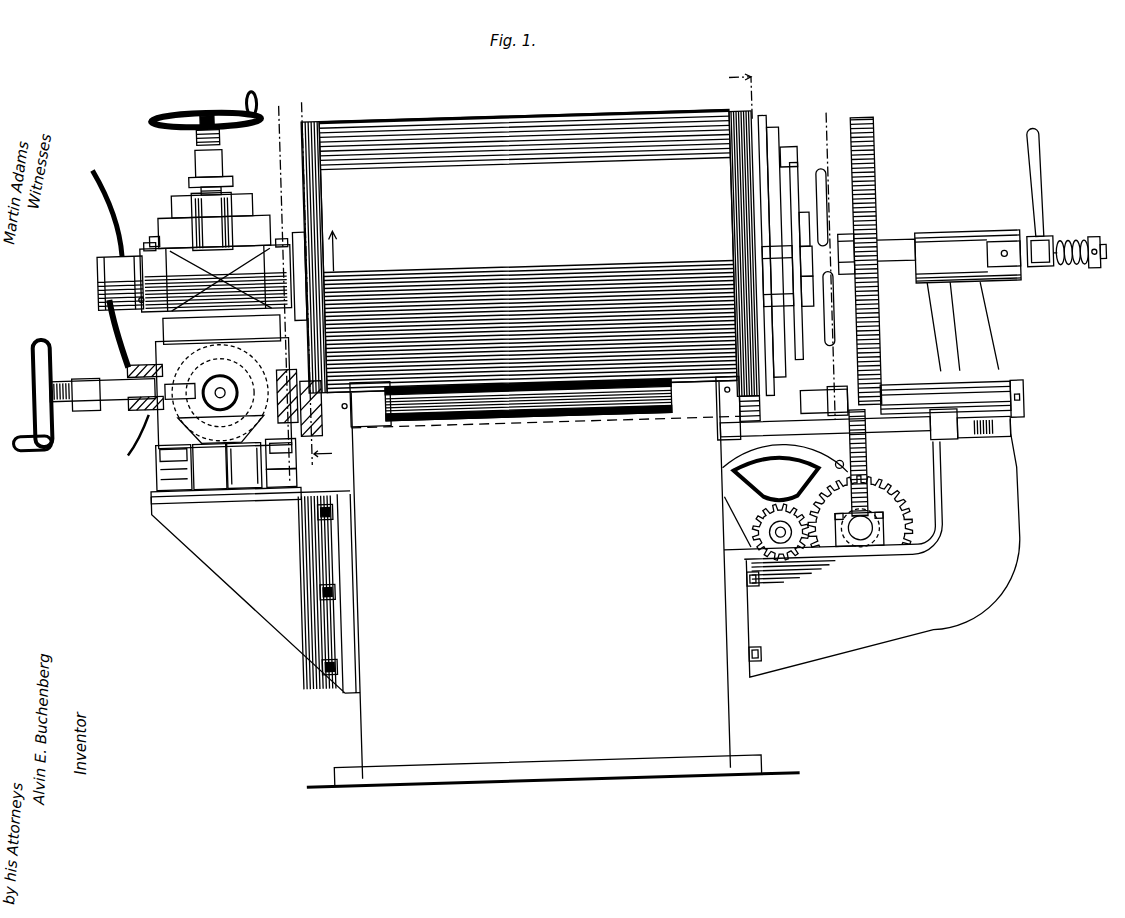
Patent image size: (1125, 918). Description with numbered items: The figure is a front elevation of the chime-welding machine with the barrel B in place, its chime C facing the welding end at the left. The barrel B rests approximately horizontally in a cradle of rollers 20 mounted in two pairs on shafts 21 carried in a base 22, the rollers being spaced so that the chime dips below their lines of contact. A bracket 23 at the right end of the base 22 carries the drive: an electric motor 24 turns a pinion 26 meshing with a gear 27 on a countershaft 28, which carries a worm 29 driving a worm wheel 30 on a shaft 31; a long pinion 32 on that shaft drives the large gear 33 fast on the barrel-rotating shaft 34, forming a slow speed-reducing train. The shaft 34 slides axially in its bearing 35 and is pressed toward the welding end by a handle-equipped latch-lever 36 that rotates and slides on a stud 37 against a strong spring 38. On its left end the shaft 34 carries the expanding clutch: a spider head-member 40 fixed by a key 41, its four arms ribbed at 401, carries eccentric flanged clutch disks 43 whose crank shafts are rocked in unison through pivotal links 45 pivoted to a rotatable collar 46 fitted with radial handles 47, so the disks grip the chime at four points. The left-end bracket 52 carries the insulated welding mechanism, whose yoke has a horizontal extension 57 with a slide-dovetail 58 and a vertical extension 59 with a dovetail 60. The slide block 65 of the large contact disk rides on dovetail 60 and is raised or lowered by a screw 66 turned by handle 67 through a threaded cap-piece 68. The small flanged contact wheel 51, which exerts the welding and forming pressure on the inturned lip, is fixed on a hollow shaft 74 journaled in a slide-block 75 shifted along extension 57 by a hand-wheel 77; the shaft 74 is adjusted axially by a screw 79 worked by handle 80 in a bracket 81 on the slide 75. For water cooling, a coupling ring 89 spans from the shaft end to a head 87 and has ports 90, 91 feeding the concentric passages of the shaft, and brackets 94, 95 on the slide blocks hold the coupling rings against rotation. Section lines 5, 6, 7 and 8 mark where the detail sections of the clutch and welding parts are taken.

The barrel B is at (484, 113).
The rollers 20 is at (718, 402).
The shafts 21 is at (597, 413).
The base 22 is at (721, 718).
The bracket 23 is at (883, 628).
The electric motor 24 is at (738, 497).
The pinion 26 is at (790, 560).
The gear 27 is at (905, 530).
The countershaft 28 is at (862, 548).
The worm 29 is at (848, 550).
The worm wheel 30 is at (866, 462).
The shaft 31 is at (1044, 401).
The pinion 32 is at (900, 392).
The large gear 33 is at (884, 162).
The barrel rotating shaft 34 is at (900, 246).
The bearing 35 is at (958, 240).
The latch-lever 36 is at (1047, 279).
The stud 37 is at (1108, 282).
The spring 38 is at (1080, 279).
The head-member 40 is at (772, 120).
The ribs 401 is at (797, 151).
The key 41 is at (762, 470).
The clutch disks 43 is at (782, 422).
The pivotal links 45 is at (760, 316).
The rotatable collar 46 is at (812, 232).
The radial handles 47 is at (832, 352).
The section line 5— 5 is at (844, 385).
The section line 6— 6 is at (763, 473).
The section line 7— 7 is at (288, 469).
The section line 8— 8 is at (316, 458).
The chime C is at (316, 451).
The small contact wheel 51 is at (281, 463).
The bracket 52 is at (231, 555).
The horizontal extension 57 is at (158, 480).
The horizontal slide-dovetail 58 is at (244, 466).
The vertical extension 59 is at (166, 330).
The slide dovetail 60 is at (194, 184).
The slide block 65 is at (250, 234).
The screw 66 is at (230, 124).
The handle 67 is at (241, 100).
The cap-piece 68 is at (232, 148).
The shaft 74 is at (135, 396).
The slide-block 75 is at (162, 426).
The hand-wheel 77 is at (191, 467).
The screw 79 is at (242, 372).
The handle 80 is at (50, 332).
The bracket 81 is at (90, 394).
The head 87 is at (104, 263).
The coupling ring 89 is at (121, 237).
The port 90 is at (161, 222).
The port 91 is at (118, 290).
The bracket 94 is at (122, 318).
The bracket 95 is at (135, 430).